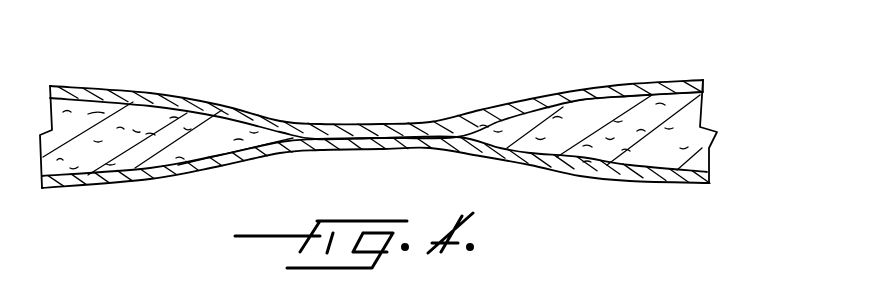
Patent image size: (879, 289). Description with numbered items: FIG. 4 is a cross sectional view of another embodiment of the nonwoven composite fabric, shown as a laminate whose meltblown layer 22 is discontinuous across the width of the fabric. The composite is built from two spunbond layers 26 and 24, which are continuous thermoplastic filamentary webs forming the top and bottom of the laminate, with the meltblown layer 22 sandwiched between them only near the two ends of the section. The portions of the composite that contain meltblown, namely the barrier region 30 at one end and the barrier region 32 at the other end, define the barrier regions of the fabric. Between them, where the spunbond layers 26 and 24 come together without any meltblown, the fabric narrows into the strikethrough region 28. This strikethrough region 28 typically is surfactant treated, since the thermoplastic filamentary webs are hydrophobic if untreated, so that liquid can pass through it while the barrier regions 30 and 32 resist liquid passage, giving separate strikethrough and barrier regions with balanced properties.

The meltblown layer 22 is at (702, 132).
The spunbond layer 24 is at (688, 82).
The spunbond layer 26 is at (667, 183).
The strikethrough region 28 is at (383, 110).
The barrier region 30 is at (137, 80).
The barrier region 32 is at (652, 82).